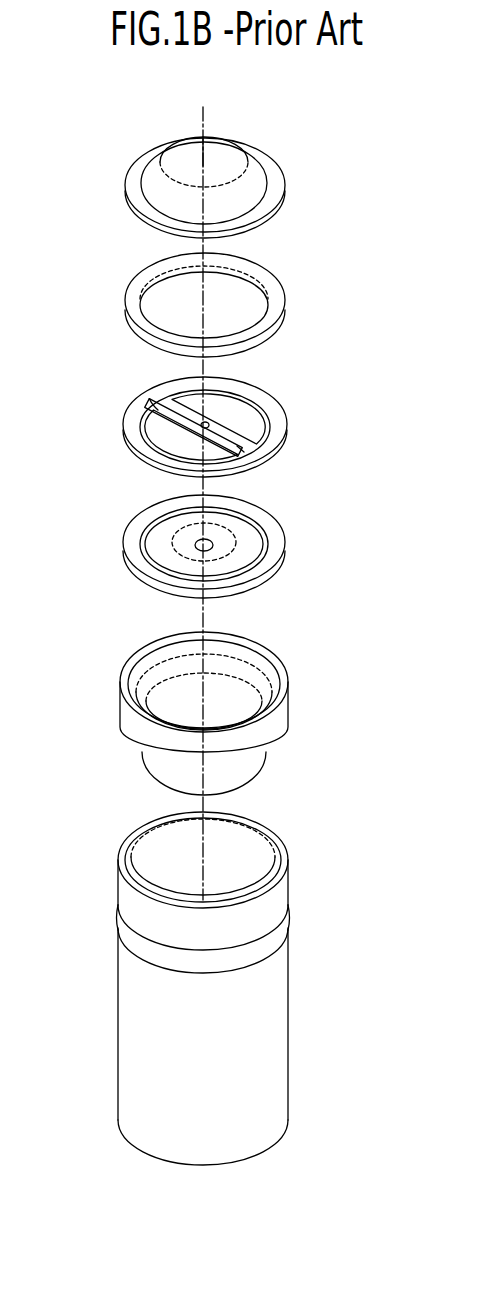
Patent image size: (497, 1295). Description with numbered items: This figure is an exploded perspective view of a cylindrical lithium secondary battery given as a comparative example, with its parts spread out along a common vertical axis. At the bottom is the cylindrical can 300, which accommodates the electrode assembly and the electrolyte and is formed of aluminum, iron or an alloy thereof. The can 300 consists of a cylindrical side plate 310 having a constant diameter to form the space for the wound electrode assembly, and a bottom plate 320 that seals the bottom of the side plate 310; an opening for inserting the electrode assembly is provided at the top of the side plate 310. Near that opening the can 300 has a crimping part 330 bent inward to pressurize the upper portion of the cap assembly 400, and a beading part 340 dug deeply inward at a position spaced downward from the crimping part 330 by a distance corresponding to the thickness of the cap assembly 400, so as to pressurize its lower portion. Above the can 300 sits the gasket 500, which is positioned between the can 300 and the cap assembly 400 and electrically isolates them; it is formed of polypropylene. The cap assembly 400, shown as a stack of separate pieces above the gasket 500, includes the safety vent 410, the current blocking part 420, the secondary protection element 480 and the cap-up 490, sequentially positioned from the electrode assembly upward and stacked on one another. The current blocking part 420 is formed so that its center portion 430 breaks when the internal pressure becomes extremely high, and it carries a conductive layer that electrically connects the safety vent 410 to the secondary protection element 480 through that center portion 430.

The cylindrical can 300 is at (371, 872).
The cylindrical side plate 310 is at (282, 1032).
The bottom plate 320 is at (270, 1147).
The crimping part 330 is at (282, 895).
The beading part 340 is at (285, 925).
The cap assembly 400 is at (368, 556).
The safety vent 410 is at (285, 543).
The current blocking part 420 is at (213, 427).
The center portion 430 is at (140, 423).
The secondary protection element 480 is at (285, 300).
The cap-up 490 is at (285, 183).
The gasket 500 is at (285, 718).